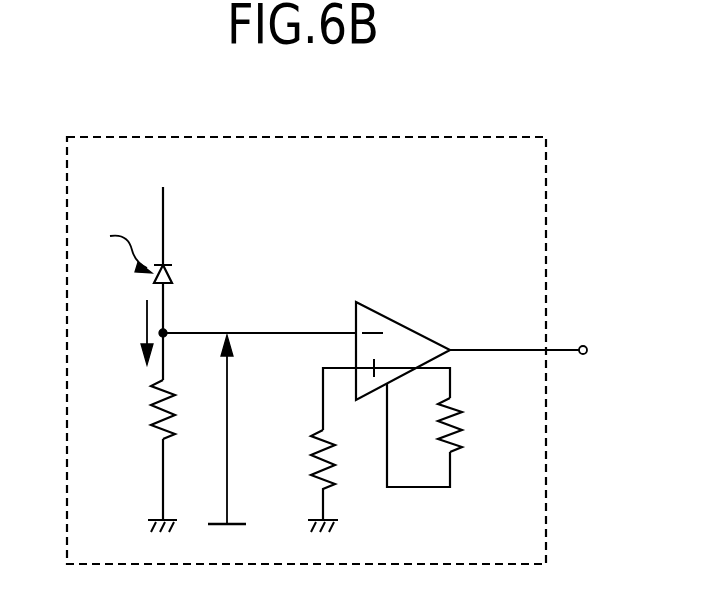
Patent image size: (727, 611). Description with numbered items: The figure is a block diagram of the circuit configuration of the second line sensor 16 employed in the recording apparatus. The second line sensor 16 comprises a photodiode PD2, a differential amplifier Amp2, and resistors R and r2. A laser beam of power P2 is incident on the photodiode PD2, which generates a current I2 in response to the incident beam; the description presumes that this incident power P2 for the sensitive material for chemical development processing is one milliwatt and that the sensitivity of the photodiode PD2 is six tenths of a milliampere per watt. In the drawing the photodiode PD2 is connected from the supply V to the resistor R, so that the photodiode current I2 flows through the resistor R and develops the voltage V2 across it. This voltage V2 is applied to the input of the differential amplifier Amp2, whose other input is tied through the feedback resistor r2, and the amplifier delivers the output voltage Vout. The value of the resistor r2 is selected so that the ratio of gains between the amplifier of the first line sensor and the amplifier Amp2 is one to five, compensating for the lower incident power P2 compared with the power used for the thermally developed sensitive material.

The second line sensor 16 is at (548, 232).
The photodiode PD2 is at (197, 279).
The power of the incident laser beam P2 is at (112, 246).
The resistor R is at (146, 409).
The differential amplifier Amp2 is at (409, 343).
The resistor r2 is at (466, 425).
The supply voltage V is at (146, 213).
The photocurrent I2 is at (133, 332).
The detection voltage V2 is at (227, 429).
The output voltage Vout is at (555, 351).